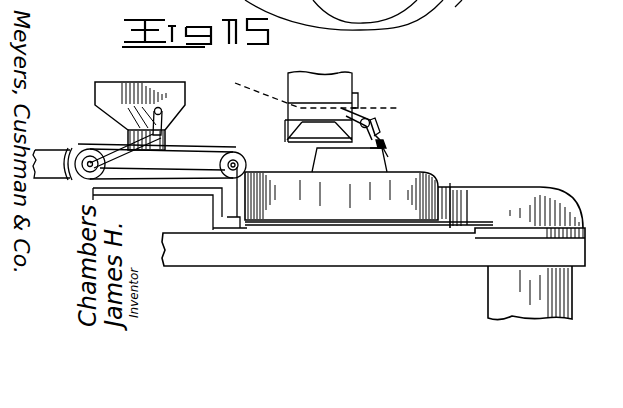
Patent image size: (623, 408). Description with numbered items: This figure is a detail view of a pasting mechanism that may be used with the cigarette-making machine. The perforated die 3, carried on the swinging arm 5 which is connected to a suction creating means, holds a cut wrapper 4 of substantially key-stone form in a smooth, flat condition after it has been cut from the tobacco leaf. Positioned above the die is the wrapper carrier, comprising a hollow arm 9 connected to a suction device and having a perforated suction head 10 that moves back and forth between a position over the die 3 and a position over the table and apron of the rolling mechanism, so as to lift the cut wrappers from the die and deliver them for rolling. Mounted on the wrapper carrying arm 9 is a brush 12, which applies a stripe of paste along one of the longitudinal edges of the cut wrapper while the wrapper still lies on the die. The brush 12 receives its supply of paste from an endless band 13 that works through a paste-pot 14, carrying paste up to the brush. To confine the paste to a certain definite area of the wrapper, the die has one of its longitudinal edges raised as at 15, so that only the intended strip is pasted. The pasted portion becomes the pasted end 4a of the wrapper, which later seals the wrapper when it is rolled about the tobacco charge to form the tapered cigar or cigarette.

The die 3 is at (377, 160).
The wrapper 4 is at (352, 150).
The pasted end 4a is at (383, 149).
The swinging arm 5 is at (510, 192).
The hollow arm 9 is at (345, 85).
The suction head 10 is at (288, 128).
The brush 12 is at (380, 132).
The endless band 13 is at (200, 152).
The paste-pot 14 is at (175, 97).
The raised edge 15 is at (386, 150).